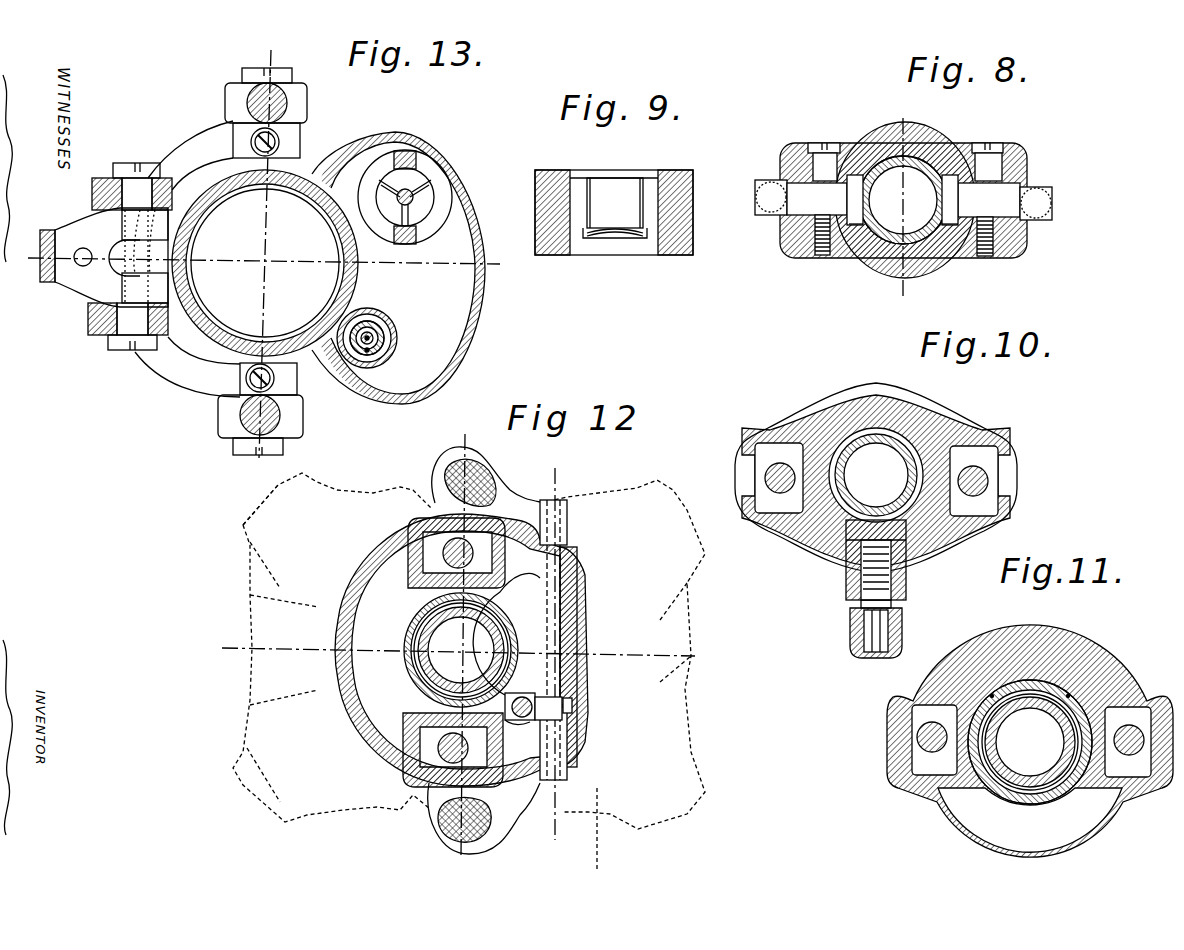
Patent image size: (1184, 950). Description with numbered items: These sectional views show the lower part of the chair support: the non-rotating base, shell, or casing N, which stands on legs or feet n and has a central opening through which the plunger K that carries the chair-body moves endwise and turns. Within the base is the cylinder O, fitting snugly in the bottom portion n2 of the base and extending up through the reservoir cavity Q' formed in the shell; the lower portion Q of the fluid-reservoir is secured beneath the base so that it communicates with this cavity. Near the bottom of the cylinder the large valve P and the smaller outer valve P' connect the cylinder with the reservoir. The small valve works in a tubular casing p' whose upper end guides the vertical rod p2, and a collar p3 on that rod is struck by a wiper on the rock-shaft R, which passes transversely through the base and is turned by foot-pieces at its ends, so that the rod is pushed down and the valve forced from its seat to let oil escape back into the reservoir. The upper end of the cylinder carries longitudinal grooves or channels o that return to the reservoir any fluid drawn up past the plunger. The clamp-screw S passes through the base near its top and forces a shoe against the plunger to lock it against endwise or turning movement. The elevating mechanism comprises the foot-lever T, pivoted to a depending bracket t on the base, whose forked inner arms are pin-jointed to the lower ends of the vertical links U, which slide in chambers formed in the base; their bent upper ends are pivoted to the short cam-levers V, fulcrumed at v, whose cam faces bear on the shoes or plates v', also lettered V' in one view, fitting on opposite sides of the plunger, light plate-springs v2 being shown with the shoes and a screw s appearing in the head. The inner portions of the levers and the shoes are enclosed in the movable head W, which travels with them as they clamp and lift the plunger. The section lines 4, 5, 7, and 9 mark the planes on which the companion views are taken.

In FIG. 13, the section line 4- 4 is at (263, 264).
In FIG. 12, the section line 4- 4 is at (462, 643).
In FIG. 13, the section line 5- 5 is at (263, 262).
In FIG. 12, the section line 5- 5 is at (457, 654).
In FIG. 12, the section line 7- 7 is at (552, 654).
In FIG. 8, the section line 9- 9 is at (901, 211).
In FIG. 13, the vertical links or arms U is at (300, 105).
In FIG. 8, the vertical links or arms U is at (756, 198).
In FIG. 10, the vertical links or arms U is at (790, 447).
In FIG. 11, the vertical links or arms U is at (943, 757).
In FIG. 12, the vertical links or arms U is at (446, 549).
In FIG. 13, the depending arm or bracket t is at (113, 177).
In FIG. 13, the foot-lever T is at (104, 257).
In FIG. 13, the cylinder O is at (313, 334).
In FIG. 11, the cylinder O is at (1017, 687).
In FIG. 12, the cylinder O is at (410, 694).
In FIG. 13, the large valve P is at (405, 201).
In FIG. 13, the smaller or outer valve P' is at (380, 338).
In FIG. 13, the tubular valve-casing p' is at (378, 312).
In FIG. 12, the tubular valve-casing p' is at (555, 697).
In FIG. 13, the vertical rod or connection p2 is at (367, 357).
In FIG. 12, the vertical rod or connection p2 is at (524, 695).
In FIG. 12, the collar p3 is at (522, 724).
In FIG. 13, the fluid-reservoir Q is at (398, 268).
In FIG. 12, the fluid-reservoir Q is at (461, 650).
In FIG. 11, the reservoir cavity Q' is at (1030, 820).
In FIG. 12, the reservoir cavity Q' is at (372, 682).
In FIG. 9, the short links or levers V is at (614, 227).
In FIG. 8, the short links or levers V is at (893, 200).
In FIG. 9, the plunger block V' is at (615, 203).
In FIG. 9, the light plate-springs v2 is at (623, 238).
In FIG. 9, the movable head W is at (693, 229).
In FIG. 8, the movable head W is at (880, 262).
In FIG. 8, the shaft opening K is at (932, 197).
In FIG. 10, the shaft opening K is at (901, 471).
In FIG. 11, the shaft opening K is at (1049, 731).
In FIG. 12, the shaft opening K is at (465, 645).
In FIG. 8, the set screw s is at (824, 199).
In FIG. 8, the fulcra or pivots v is at (987, 199).
In FIG. 8, the shoes or plates v' is at (899, 252).
In FIG. 10, the clamp-screw S is at (895, 603).
In FIG. 11, the longitudinal grooves or channels o is at (992, 696).
In FIG. 12, the rock-shaft R is at (587, 578).
In FIG. 12, the base, shell, or casing N is at (469, 671).
In FIG. 12, the legs or feet n is at (465, 651).
In FIG. 12, the bottom portion of base n2 is at (396, 601).